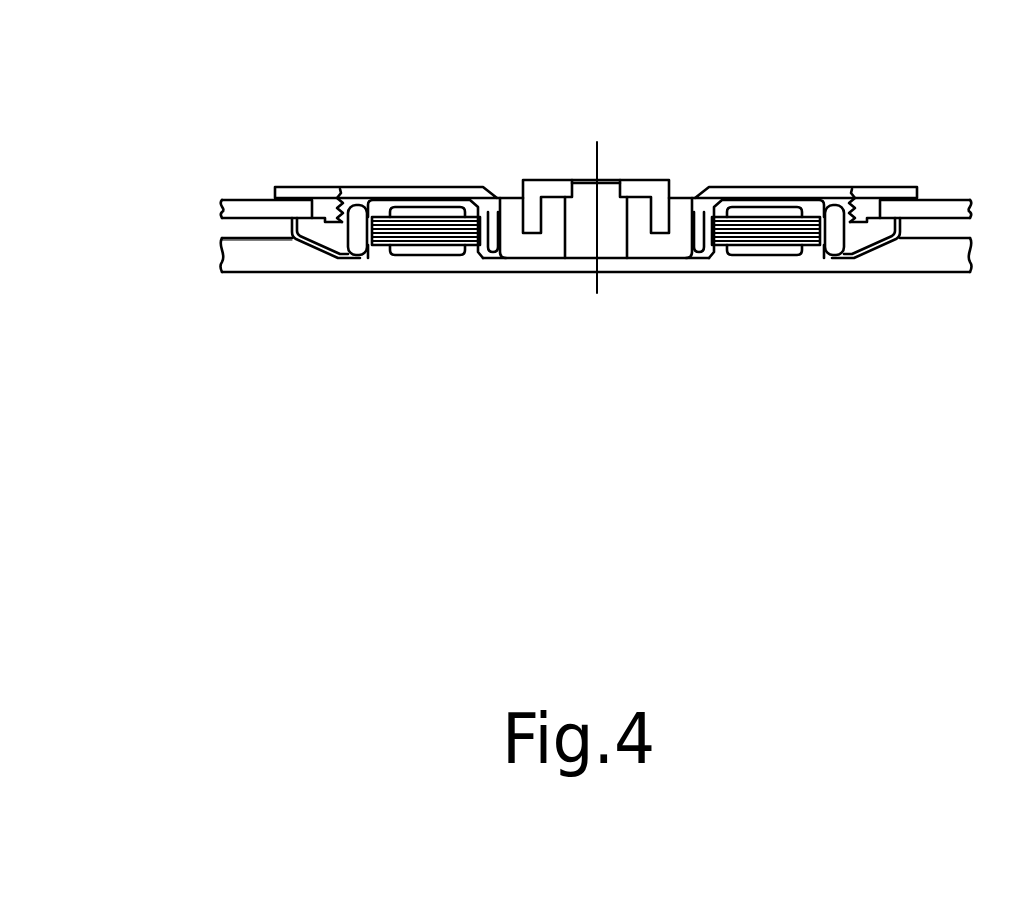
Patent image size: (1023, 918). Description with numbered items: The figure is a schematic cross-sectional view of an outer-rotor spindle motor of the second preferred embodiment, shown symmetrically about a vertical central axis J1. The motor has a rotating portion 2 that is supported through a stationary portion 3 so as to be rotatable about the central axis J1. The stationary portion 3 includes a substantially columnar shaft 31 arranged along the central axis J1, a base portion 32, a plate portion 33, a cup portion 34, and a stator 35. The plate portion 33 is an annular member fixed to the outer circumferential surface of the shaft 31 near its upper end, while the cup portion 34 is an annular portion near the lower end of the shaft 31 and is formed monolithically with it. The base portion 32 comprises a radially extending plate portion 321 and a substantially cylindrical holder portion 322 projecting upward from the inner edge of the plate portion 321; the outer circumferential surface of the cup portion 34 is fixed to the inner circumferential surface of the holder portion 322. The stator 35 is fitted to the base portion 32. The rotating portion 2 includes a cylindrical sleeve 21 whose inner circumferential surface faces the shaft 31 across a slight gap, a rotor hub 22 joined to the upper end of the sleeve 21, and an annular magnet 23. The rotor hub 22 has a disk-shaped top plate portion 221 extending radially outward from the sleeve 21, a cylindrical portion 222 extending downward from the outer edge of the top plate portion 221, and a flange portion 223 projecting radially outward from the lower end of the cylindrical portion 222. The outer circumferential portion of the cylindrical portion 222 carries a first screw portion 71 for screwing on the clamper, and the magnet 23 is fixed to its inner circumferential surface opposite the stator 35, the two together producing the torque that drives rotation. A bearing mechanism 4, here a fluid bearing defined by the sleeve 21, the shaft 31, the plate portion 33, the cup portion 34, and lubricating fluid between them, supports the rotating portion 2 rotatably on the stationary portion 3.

The rotating portion 2 is at (658, 112).
The stationary portion 3 is at (788, 314).
The bearing mechanism 4 is at (596, 280).
The sleeve 21 is at (545, 242).
The rotor hub 22 is at (340, 305).
The magnet 23 is at (833, 228).
The shaft 31 is at (585, 243).
The base portion 32 is at (788, 265).
The plate portion 33 is at (540, 187).
The cup portion 34 is at (647, 262).
The stator 35 is at (387, 194).
The first screw portion 71 is at (341, 200).
The top plate portion 221 is at (410, 232).
The cylindrical portion 222 is at (340, 233).
The flange portion 223 is at (310, 228).
The plate portion 321 is at (745, 262).
The holder portion 322 is at (703, 247).
The central axis J1 is at (597, 172).